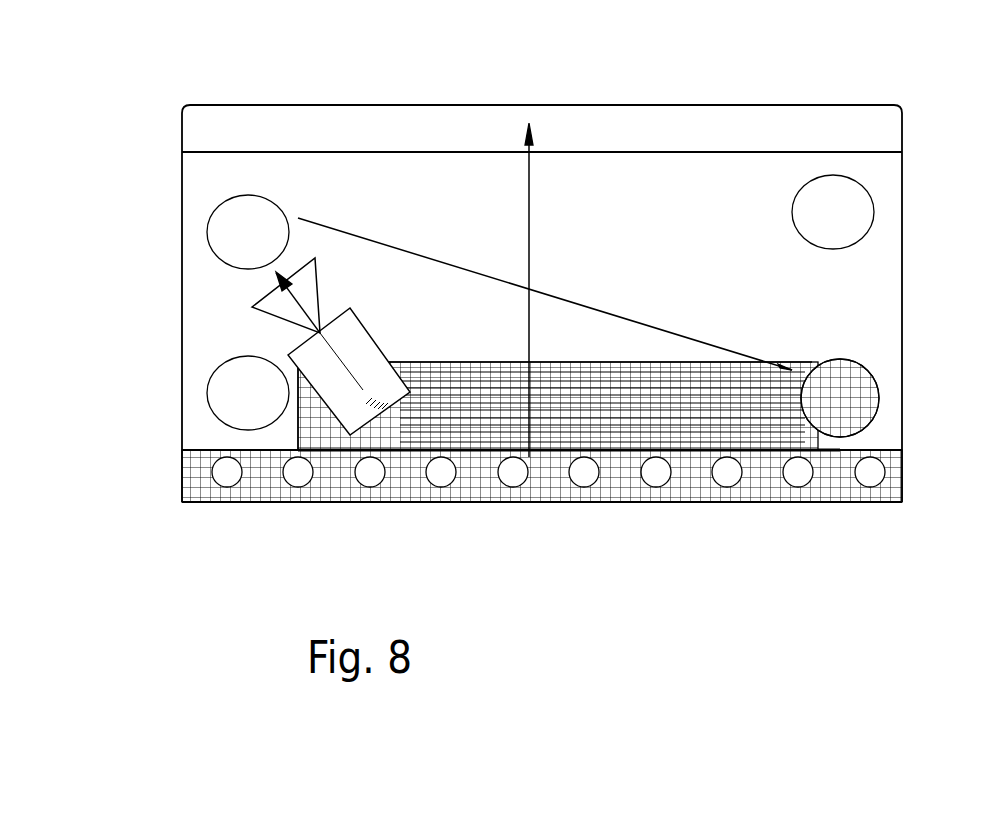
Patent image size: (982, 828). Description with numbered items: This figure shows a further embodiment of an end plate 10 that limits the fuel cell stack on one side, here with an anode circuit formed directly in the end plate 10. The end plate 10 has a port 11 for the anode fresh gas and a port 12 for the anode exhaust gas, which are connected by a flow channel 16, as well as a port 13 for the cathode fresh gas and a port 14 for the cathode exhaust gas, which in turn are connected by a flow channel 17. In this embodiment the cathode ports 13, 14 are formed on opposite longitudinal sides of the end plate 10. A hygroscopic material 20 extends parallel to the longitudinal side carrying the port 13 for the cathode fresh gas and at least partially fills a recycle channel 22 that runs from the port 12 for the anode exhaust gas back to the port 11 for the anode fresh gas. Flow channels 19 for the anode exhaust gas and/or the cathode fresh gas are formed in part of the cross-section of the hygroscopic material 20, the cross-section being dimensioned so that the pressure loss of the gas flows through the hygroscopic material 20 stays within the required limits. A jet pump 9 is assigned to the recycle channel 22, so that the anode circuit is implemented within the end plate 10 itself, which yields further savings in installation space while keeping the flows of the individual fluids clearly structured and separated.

The jet pump 9 is at (307, 357).
The end plate 10 is at (880, 277).
The port for the anode fresh gas 11 is at (223, 227).
The port for the anode exhaust gas 12 is at (865, 402).
The port for the cathode fresh gas 13 is at (542, 510).
The port for the cathode exhaust gas 14 is at (843, 118).
The flow channel 16 is at (488, 276).
The flow channel 17 is at (530, 207).
The flow channels 19 is at (363, 133).
The hygroscopic material 20 is at (472, 503).
The recycle channel 22 is at (453, 378).